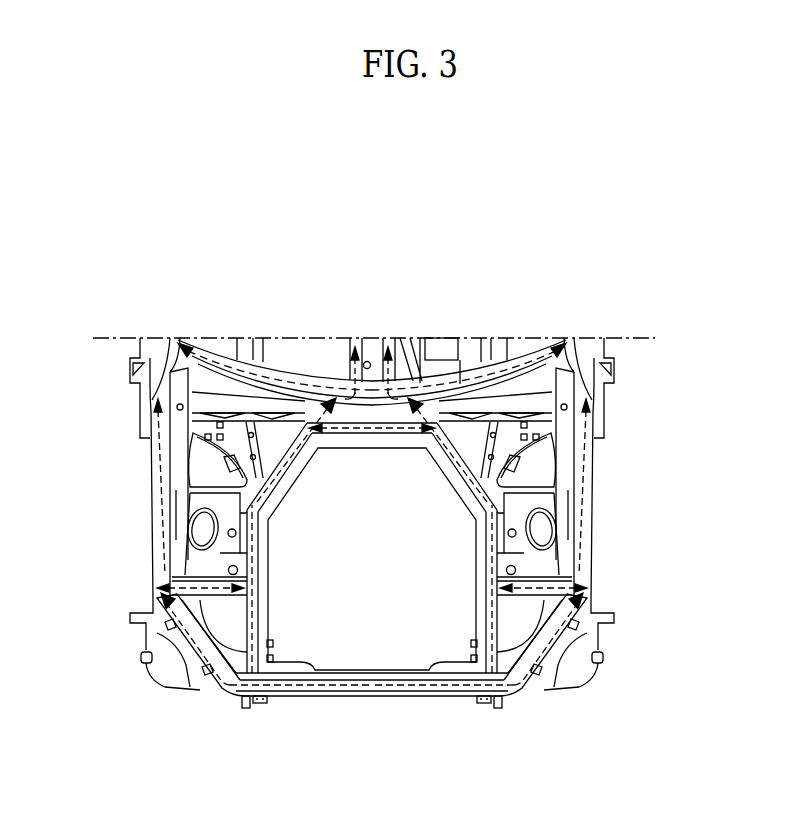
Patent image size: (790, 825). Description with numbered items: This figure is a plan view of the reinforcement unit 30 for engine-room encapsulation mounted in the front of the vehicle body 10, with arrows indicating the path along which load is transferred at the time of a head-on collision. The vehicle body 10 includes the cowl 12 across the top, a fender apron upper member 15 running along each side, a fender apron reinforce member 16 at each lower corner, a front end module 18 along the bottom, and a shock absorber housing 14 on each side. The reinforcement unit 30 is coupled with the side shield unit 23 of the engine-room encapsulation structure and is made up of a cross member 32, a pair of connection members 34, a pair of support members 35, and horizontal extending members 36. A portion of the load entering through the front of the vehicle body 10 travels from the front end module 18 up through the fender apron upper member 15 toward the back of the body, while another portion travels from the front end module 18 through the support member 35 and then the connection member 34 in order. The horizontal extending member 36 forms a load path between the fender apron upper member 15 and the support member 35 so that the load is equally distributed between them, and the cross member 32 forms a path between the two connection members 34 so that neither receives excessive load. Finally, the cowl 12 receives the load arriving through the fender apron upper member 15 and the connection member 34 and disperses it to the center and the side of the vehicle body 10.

The vehicle body 10 is at (418, 355).
The cowl 12 is at (374, 400).
The shock absorber housing 14 is at (200, 563).
The fender apron upper member 15 is at (152, 457).
The fender apron reinforce member 16 is at (183, 667).
The front end module 18 is at (367, 690).
The side shield unit 23 is at (333, 444).
The reinforcement unit 30 is at (386, 482).
The cross member 32 is at (370, 430).
The connection member 34 is at (262, 478).
The support member 35 is at (257, 573).
The horizontal extending member 36 is at (203, 592).